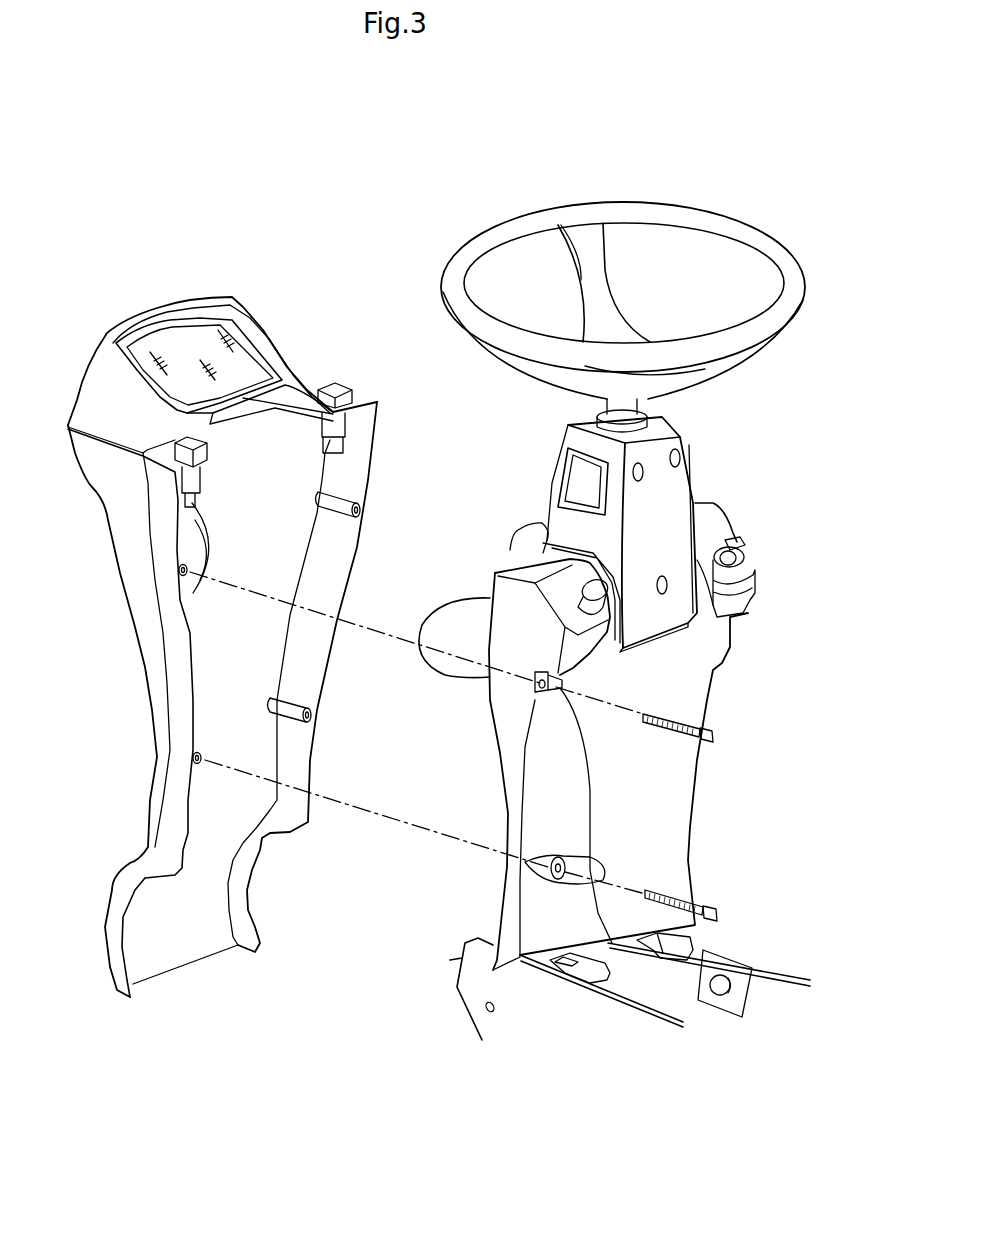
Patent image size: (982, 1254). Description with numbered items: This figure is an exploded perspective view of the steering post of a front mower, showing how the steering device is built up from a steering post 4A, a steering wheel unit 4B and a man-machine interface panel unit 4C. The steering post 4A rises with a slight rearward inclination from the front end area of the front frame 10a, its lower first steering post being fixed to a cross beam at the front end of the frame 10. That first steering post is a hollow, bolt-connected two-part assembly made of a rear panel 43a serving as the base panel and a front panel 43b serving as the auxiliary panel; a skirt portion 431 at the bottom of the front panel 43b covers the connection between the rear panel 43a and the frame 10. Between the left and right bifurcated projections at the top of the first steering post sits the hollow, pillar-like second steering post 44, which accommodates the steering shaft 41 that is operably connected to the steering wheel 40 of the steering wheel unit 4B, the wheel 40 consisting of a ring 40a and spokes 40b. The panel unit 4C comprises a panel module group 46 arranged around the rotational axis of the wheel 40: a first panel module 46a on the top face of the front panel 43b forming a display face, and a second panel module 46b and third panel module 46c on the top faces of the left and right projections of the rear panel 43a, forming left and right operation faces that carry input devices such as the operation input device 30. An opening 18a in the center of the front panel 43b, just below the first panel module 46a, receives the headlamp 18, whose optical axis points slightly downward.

The steering post 4A is at (717, 701).
The steering wheel unit 4B is at (610, 181).
The man-machine interface panel unit 4C is at (175, 288).
The front frame 10a is at (590, 1018).
The frame 10 is at (630, 1007).
The headlamp 18 is at (455, 598).
The opening 18a is at (197, 533).
The operation input device 30 is at (577, 605).
The steering wheel 40 is at (623, 290).
The ring 40a is at (713, 210).
The spokes 40b is at (604, 271).
The steering shaft 41 is at (587, 483).
The rear panel 43a is at (676, 797).
The front panel 43b is at (150, 718).
The skirt portion 431 is at (183, 945).
The second steering post 44 is at (677, 488).
The panel module group 46 is at (640, 589).
The first panel module 46a is at (252, 353).
The second panel module 46b is at (530, 567).
The third panel module 46c is at (718, 527).